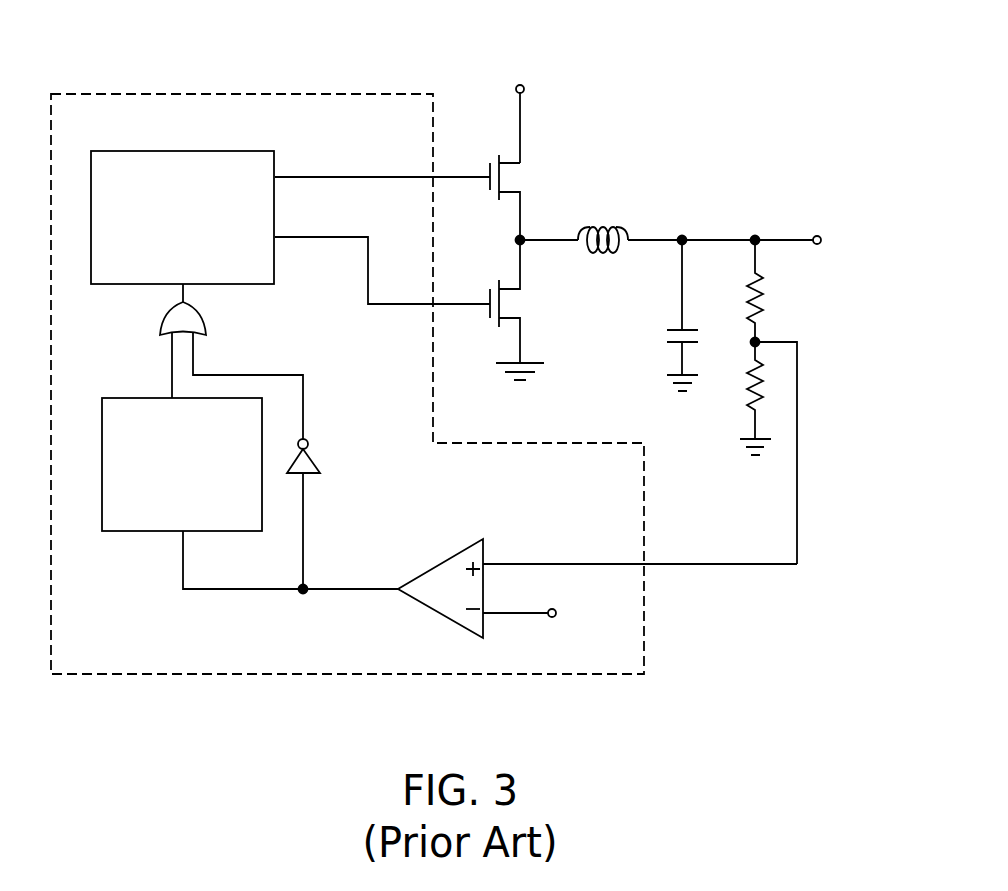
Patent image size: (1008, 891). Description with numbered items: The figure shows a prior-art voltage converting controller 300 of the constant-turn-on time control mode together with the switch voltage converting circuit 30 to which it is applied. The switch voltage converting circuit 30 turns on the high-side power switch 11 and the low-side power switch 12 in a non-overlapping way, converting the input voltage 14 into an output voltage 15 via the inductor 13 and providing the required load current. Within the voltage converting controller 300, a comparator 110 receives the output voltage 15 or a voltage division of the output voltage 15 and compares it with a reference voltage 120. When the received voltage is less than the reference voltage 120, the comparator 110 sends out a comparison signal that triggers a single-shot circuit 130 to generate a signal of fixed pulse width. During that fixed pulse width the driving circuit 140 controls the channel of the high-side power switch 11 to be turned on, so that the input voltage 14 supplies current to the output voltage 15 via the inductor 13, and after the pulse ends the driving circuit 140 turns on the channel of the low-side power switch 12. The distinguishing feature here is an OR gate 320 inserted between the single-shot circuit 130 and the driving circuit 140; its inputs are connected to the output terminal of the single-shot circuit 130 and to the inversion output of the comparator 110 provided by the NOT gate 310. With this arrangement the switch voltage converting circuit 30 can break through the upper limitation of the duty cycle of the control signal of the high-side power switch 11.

The switch voltage converting circuit 30 is at (470, 351).
The voltage converting controller 300 is at (359, 127).
The driving circuit 140 is at (163, 257).
The OR gate 320 is at (203, 321).
The single-shot circuit 130 is at (162, 503).
The NOT gate 310 is at (318, 461).
The comparator 110 is at (428, 602).
The reference voltage 120 is at (556, 613).
The input voltage 14 is at (520, 85).
The high-side power switch 11 is at (522, 163).
The low-side power switch 12 is at (522, 289).
The inductor 13 is at (616, 226).
The output voltage 15 is at (821, 240).